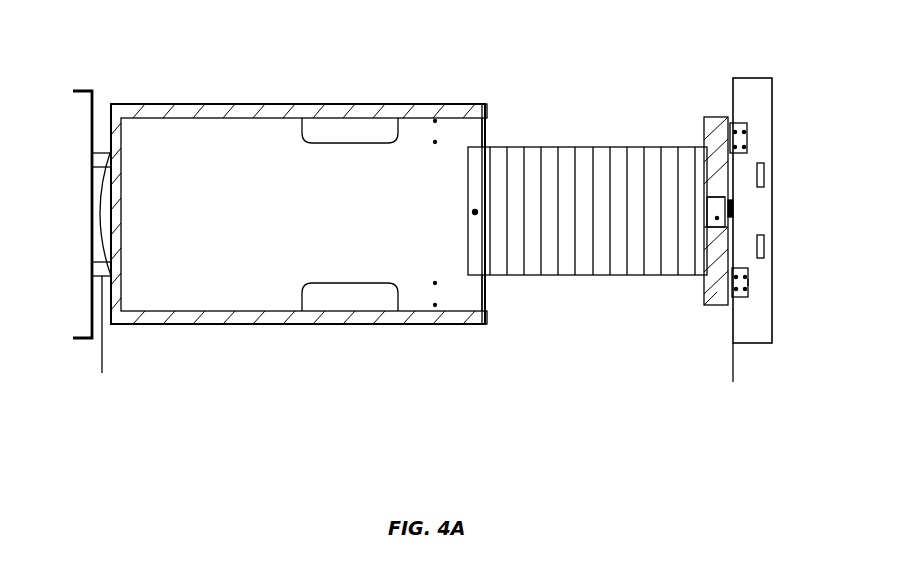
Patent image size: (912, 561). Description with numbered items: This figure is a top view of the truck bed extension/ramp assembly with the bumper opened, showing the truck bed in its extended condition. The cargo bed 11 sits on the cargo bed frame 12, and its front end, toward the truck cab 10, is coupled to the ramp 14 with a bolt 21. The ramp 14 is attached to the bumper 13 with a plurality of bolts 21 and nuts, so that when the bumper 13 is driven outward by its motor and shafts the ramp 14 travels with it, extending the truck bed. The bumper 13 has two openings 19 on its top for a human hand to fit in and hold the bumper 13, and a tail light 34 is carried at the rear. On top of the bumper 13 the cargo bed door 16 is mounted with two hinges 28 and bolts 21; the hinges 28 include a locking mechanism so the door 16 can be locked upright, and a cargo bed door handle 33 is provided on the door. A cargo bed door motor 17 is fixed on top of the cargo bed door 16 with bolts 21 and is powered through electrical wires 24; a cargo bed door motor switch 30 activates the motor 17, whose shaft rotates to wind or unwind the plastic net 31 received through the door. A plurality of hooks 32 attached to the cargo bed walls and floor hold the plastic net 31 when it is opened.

The truck cab 10 is at (86, 92).
The cargo bed 11 is at (259, 95).
The cargo bed frame 12 is at (105, 339).
The bumper 13 is at (761, 344).
The ramp 14 is at (492, 276).
The cargo bed door 16 is at (721, 306).
The cargo bed door motor 17 is at (711, 197).
The opening 19 is at (765, 176).
The bolt 21 is at (475, 212).
The electrical wire 24 is at (102, 192).
The hinge 28 is at (749, 282).
The cargo bed door motor switch 30 is at (712, 208).
The plastic net 31 is at (707, 268).
The hook 32 is at (440, 115).
The cargo bed door handle 33 is at (734, 210).
The tail light 34 is at (486, 104).